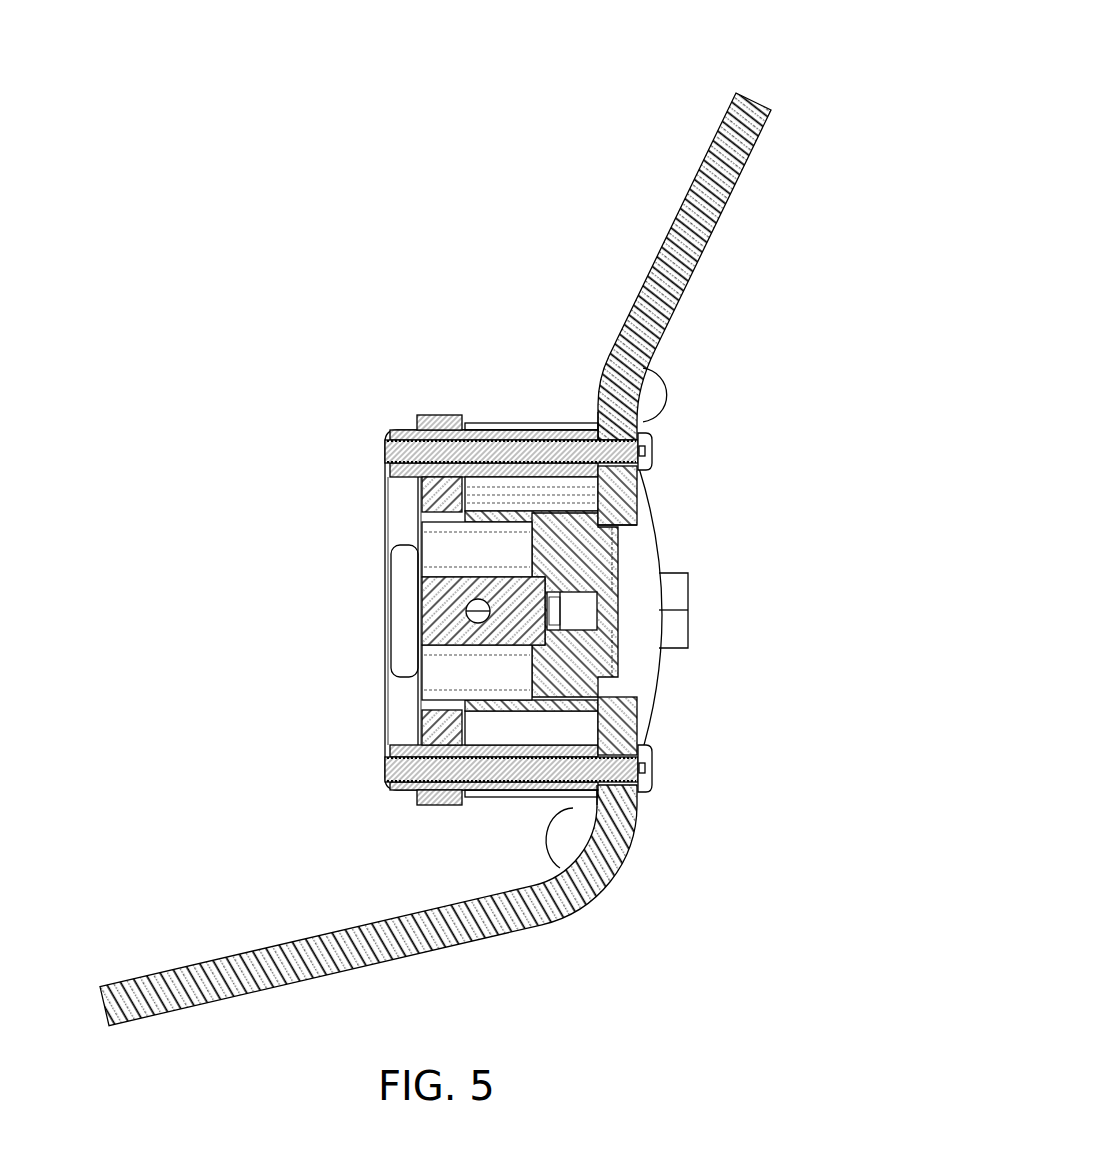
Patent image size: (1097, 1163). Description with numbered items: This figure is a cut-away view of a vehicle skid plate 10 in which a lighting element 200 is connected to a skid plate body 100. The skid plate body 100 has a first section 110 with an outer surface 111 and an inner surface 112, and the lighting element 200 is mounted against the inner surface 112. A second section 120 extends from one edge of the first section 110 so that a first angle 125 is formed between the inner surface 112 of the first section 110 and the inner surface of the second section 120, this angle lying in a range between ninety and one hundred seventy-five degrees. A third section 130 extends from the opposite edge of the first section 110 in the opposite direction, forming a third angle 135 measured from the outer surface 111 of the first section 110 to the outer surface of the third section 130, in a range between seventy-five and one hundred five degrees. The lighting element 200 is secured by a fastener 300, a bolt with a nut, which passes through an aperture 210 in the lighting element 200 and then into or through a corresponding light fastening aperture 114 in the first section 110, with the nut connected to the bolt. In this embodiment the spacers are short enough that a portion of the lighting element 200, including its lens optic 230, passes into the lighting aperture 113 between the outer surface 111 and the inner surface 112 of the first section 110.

The vehicle skid plate 10 is at (455, 176).
The skid plate body 100 is at (758, 85).
The first section 110 is at (623, 510).
The outer surface 111 is at (637, 517).
The inner surface 112 is at (598, 417).
The lighting aperture 113 is at (622, 527).
The light fastening aperture 114 is at (600, 410).
The second section 120 is at (320, 940).
The first angle 125 is at (548, 848).
The third section 130 is at (728, 178).
The third angle 135 is at (668, 393).
The lighting element 200 is at (472, 408).
The aperture 210 is at (465, 467).
The lens optic 230 is at (657, 685).
The fastener 300 is at (652, 455).